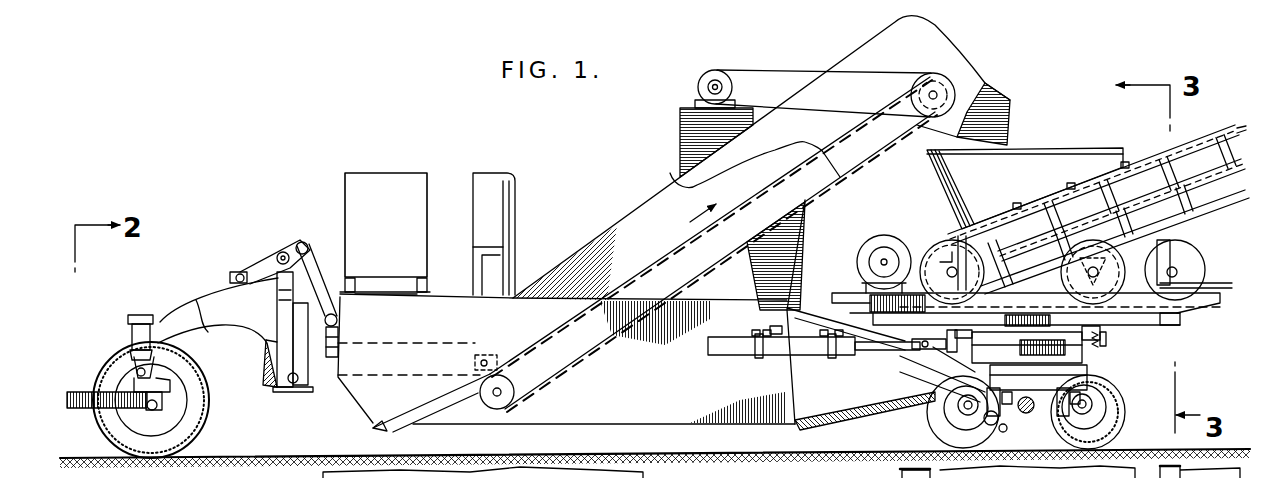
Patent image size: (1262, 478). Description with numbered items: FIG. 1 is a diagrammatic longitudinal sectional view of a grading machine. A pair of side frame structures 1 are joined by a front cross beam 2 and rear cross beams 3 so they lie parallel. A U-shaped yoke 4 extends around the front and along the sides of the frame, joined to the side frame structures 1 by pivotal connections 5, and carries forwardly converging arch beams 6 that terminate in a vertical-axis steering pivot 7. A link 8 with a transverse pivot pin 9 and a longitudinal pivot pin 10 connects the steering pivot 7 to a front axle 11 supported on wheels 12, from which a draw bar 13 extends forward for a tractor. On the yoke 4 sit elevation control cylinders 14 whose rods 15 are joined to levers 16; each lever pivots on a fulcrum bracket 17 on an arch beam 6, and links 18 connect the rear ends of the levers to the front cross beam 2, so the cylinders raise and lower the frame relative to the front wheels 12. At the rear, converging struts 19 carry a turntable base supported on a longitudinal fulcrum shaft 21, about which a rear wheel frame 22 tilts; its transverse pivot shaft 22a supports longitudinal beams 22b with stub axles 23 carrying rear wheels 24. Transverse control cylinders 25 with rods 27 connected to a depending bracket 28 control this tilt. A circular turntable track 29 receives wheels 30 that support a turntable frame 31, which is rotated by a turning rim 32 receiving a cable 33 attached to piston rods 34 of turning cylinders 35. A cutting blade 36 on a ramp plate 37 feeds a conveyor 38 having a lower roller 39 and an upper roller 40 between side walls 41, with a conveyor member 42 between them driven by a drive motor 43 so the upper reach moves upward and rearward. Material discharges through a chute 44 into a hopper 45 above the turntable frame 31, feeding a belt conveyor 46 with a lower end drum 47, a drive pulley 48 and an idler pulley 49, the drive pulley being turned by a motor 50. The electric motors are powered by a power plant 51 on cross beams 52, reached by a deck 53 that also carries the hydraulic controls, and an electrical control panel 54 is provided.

The side frame structures 1 is at (592, 398).
The front cross beam 2 is at (338, 338).
The rear cross beams 3 is at (776, 326).
The U-shaped yoke 4 is at (262, 362).
The pivotal connections 5 is at (484, 352).
The arch beams 6 is at (207, 300).
The steering pivot 7 is at (127, 325).
The link 8 is at (162, 372).
The transverse pivot pin 9 is at (132, 367).
The longitudinal pivot pin 10 is at (147, 400).
The front axle 11 is at (168, 408).
The wheels 12 is at (110, 430).
The draw bar 13 is at (82, 391).
The elevation control cylinders 14 is at (280, 313).
The rods 15 is at (272, 262).
The levers 16 is at (283, 251).
The fulcrum bracket 17 is at (237, 274).
The links 18 is at (313, 282).
The struts 19 is at (903, 372).
The fulcrum shaft 21 is at (1082, 352).
The rear wheel frame 22 is at (1067, 373).
The transverse pivot shaft 22a is at (1000, 418).
The beams 22b is at (1115, 428).
The stub axles 23 is at (1093, 403).
The rear wheels 24 is at (1100, 417).
The transverse control cylinders 25 is at (1003, 431).
The rods 27 is at (1047, 417).
The depending bracket 28 is at (1087, 387).
The turntable track 29 is at (1104, 336).
The wheels 30 is at (1110, 344).
The turntable frame 31 is at (845, 292).
The turning rim 32 is at (870, 332).
The cable 33 is at (900, 347).
The piston rods 34 is at (853, 356).
The turning cylinders 35 is at (776, 345).
The cutting blade 36 is at (387, 426).
The ramp plate 37 is at (448, 412).
The conveyor 38 is at (600, 347).
The lower roller 39 is at (512, 393).
The upper roller 40 is at (910, 100).
The side walls 41 is at (660, 196).
The conveyor member 42 is at (634, 268).
The drive motor 43 is at (716, 70).
The chute 44 is at (998, 97).
The hopper 45 is at (1026, 163).
The belt conveyor 46 is at (1150, 160).
The lower end drum 47 is at (936, 258).
The drive pulley 48 is at (1110, 268).
The idler pulley 49 is at (1180, 248).
The motor 50 is at (872, 247).
The power plant 51 is at (373, 173).
The cross beams 52 is at (352, 284).
The deck 53 is at (436, 292).
The electrical control panel 54 is at (487, 190).